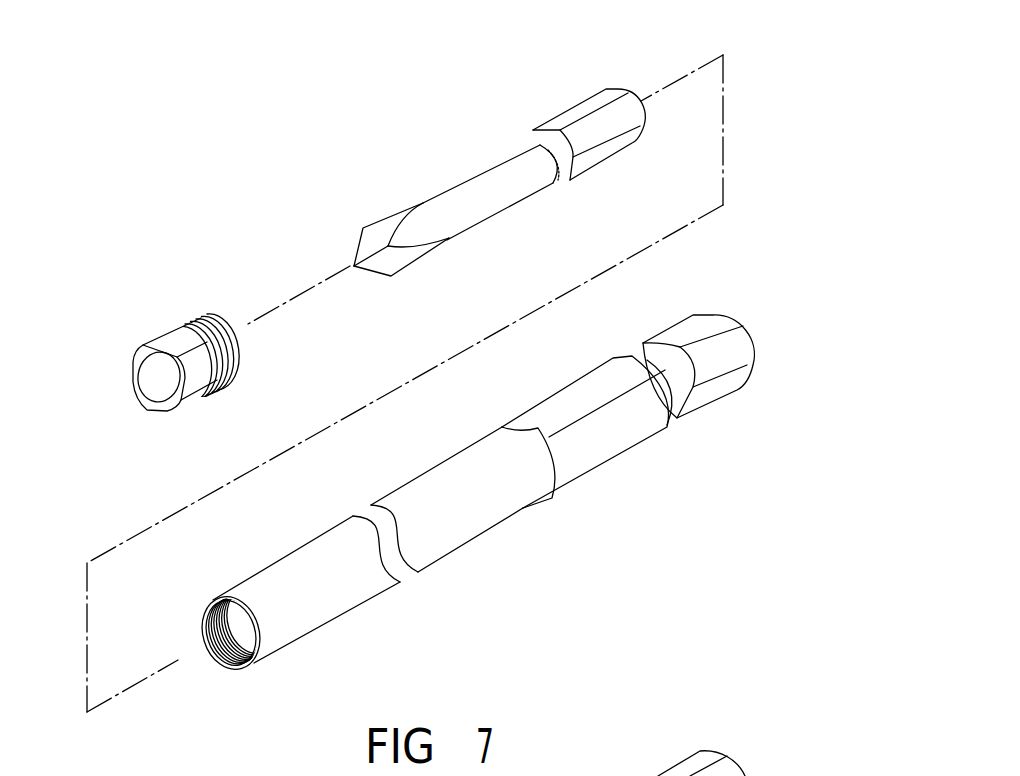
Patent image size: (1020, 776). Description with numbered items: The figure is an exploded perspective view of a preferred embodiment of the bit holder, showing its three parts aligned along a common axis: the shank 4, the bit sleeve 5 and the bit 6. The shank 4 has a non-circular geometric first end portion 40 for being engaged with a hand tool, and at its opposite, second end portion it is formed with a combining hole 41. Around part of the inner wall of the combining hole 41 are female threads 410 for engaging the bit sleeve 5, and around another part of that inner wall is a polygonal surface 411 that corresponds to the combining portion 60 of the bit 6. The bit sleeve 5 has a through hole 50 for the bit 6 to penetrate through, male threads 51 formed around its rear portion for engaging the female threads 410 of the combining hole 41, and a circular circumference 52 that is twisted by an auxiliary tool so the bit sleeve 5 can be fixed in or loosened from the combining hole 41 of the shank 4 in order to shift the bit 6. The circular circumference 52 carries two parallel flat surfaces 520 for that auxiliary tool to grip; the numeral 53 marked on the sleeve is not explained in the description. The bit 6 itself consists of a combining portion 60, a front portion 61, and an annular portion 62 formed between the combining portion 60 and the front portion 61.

The shank 4 is at (442, 535).
The first end portion 40 is at (722, 397).
The combining hole 41 is at (197, 669).
The female threads 410 is at (233, 667).
The polygonal surface 411 is at (217, 650).
The bit sleeve 5 is at (180, 342).
The through hole 50 is at (150, 376).
The male threads 51 is at (238, 367).
The circular circumference 52 is at (200, 385).
The flat surfaces 520 is at (165, 342).
The threaded section 53 is at (225, 315).
The bit 6 is at (499, 172).
The combining portion 60 is at (577, 108).
The front portion 61 is at (475, 222).
The annular portion 62 is at (569, 180).